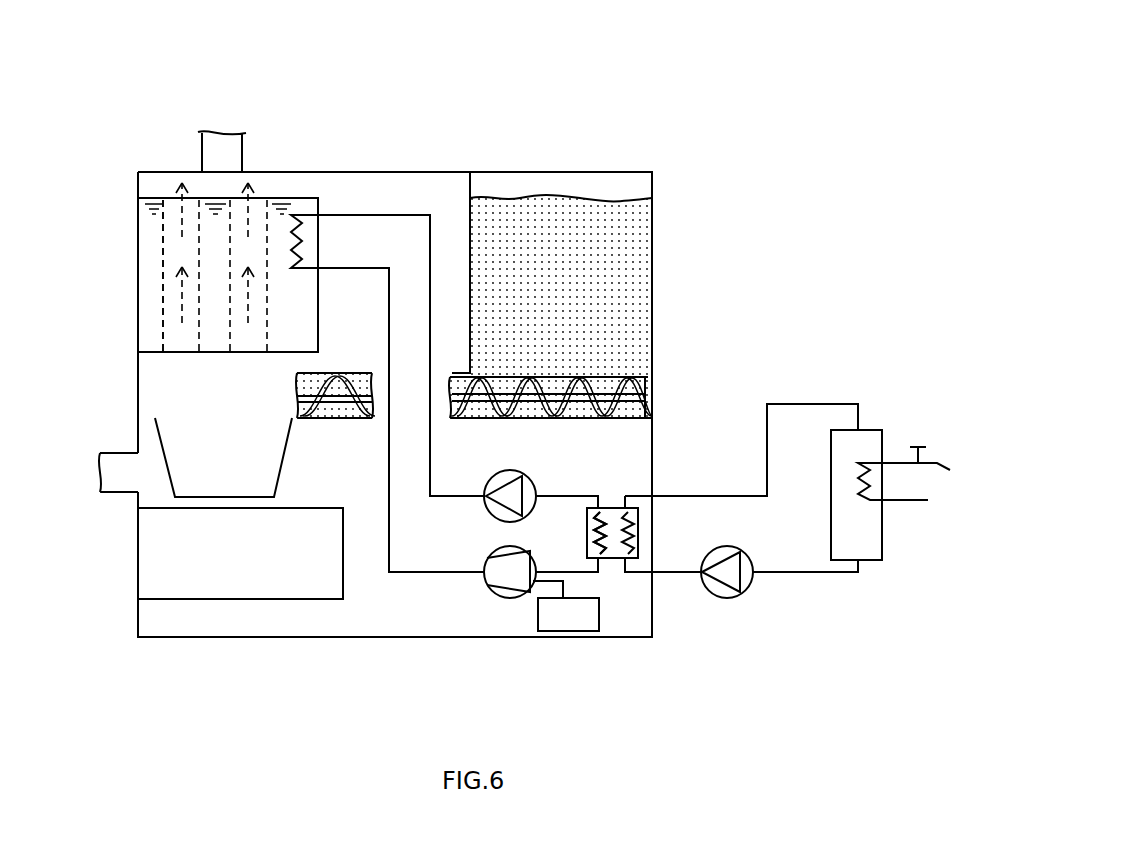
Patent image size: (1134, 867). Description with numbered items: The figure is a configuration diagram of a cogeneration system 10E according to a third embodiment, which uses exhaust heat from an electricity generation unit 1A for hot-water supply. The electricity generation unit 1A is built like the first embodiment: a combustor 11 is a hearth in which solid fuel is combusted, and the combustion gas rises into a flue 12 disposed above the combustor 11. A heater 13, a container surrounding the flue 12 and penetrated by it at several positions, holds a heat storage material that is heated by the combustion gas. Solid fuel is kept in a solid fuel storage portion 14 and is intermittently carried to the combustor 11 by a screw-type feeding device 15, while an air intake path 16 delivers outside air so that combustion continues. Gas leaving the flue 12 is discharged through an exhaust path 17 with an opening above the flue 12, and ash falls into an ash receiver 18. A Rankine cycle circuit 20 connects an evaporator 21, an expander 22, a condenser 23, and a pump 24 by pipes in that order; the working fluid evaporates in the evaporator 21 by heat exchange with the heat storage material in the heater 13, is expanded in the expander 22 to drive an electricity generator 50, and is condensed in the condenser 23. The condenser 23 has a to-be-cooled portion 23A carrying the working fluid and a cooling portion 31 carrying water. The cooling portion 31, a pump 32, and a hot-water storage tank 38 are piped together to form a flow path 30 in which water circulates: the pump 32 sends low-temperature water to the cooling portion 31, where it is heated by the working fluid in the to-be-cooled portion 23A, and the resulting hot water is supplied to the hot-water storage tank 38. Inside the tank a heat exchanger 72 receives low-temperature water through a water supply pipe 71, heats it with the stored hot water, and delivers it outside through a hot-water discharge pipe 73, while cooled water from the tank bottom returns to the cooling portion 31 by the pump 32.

The cogeneration system 10E is at (697, 100).
The electricity generation unit 1A is at (603, 172).
The combustor 11 is at (284, 470).
The flue 12 is at (168, 327).
The heater 13 is at (218, 352).
The solid fuel storage portion 14 is at (637, 270).
The feeding device 15 is at (632, 380).
The air intake path 16 is at (122, 493).
The exhaust path 17 is at (243, 142).
The ash receiver 18 is at (243, 578).
The Rankine cycle circuit 20 is at (410, 576).
The evaporator 21 is at (318, 242).
The expander 22 is at (500, 598).
The condenser 23 is at (587, 533).
The to-be-cooled portion 23A is at (610, 525).
The pump 24 is at (512, 470).
The flow path 30 is at (676, 575).
The cooling portion 31 is at (638, 533).
The pump 32 is at (725, 600).
The hot-water storage tank 38 is at (885, 545).
The electricity generator 50 is at (568, 622).
The water supply pipe 71 is at (912, 503).
The heat exchanger 72 is at (858, 485).
The hot-water discharge pipe 73 is at (942, 465).